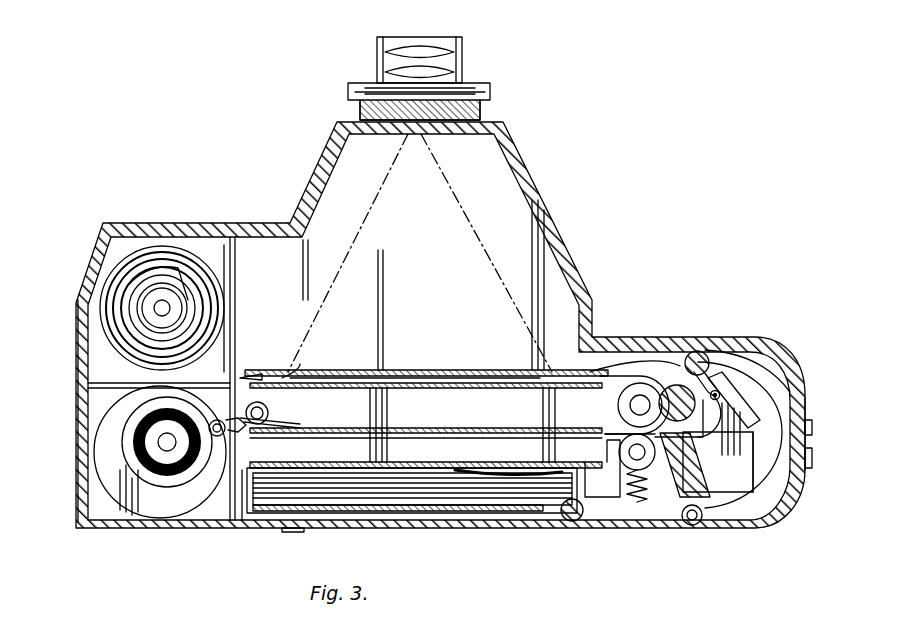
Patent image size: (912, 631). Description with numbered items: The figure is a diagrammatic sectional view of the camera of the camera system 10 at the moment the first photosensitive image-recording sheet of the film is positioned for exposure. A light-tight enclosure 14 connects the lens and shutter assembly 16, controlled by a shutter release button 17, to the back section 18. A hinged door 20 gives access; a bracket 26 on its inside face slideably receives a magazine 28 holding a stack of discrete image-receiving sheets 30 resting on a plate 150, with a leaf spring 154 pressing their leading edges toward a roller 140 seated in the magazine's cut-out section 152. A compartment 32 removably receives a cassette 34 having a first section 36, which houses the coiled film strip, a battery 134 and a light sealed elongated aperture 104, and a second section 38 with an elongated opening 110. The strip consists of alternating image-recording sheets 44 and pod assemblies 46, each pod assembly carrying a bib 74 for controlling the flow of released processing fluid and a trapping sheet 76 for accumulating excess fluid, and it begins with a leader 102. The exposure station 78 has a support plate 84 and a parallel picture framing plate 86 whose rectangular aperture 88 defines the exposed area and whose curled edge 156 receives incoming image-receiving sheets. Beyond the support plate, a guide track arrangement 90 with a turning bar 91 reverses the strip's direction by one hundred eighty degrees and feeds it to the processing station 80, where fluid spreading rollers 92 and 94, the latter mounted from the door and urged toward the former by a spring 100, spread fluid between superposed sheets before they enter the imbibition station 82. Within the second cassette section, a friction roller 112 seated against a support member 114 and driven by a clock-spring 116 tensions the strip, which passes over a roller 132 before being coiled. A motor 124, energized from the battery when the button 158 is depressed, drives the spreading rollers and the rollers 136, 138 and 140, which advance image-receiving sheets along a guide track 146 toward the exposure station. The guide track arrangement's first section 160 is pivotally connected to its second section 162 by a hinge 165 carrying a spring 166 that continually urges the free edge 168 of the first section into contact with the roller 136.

The camera system 10 is at (578, 172).
The light-tight enclosure 14 is at (509, 136).
The lens and shutter assembly 16 is at (462, 42).
The shutter release button 17 is at (812, 428).
The back section 18 is at (806, 416).
The hinged door 20 is at (258, 528).
The bracket 26 is at (304, 466).
The magazine 28 is at (232, 524).
The image-receiving sheets 30 is at (340, 497).
The compartment 32 is at (78, 320).
The cassette 34 is at (237, 273).
The first section 36 is at (225, 317).
The second section 38 is at (105, 487).
The image-recording sheets 44 is at (338, 371).
The pod assemblies 46 is at (178, 262).
The bib 74 is at (600, 375).
The trapping sheet 76 is at (248, 372).
The exposure station 78 is at (456, 365).
The processing station 80 is at (614, 424).
The imbibition station 82 is at (414, 424).
The support plate 84 is at (441, 393).
The picture framing plate 86 is at (399, 370).
The rectangular aperture 88 is at (282, 372).
The guide track arrangement 90 is at (716, 410).
The turning bar 91 is at (668, 392).
The fluid spreading roller 92 is at (632, 390).
The fluid spreading roller 94 is at (665, 502).
The spring 100 is at (637, 504).
The leader 102 is at (497, 430).
The light sealed elongated aperture 104 is at (140, 385).
The elongated opening 110 is at (221, 420).
The friction roller 112 is at (237, 436).
The support member 114 is at (265, 411).
The clock-spring 116 is at (131, 444).
The motor 124 is at (752, 477).
The roller 132 is at (270, 417).
The battery 134 is at (150, 302).
The roller 136 is at (699, 351).
The roller 138 is at (697, 525).
The roller 140 is at (576, 521).
The guide track 146 is at (755, 386).
The plate 150 is at (418, 510).
The cut-out section 152 is at (552, 512).
The leaf spring 154 is at (500, 470).
The curled edge 156 is at (676, 362).
The button 158 is at (812, 457).
The first section 160 is at (719, 392).
The second section 162 is at (704, 426).
The hinge 165 is at (722, 378).
The spring 166 is at (752, 352).
The free edge 168 is at (706, 380).